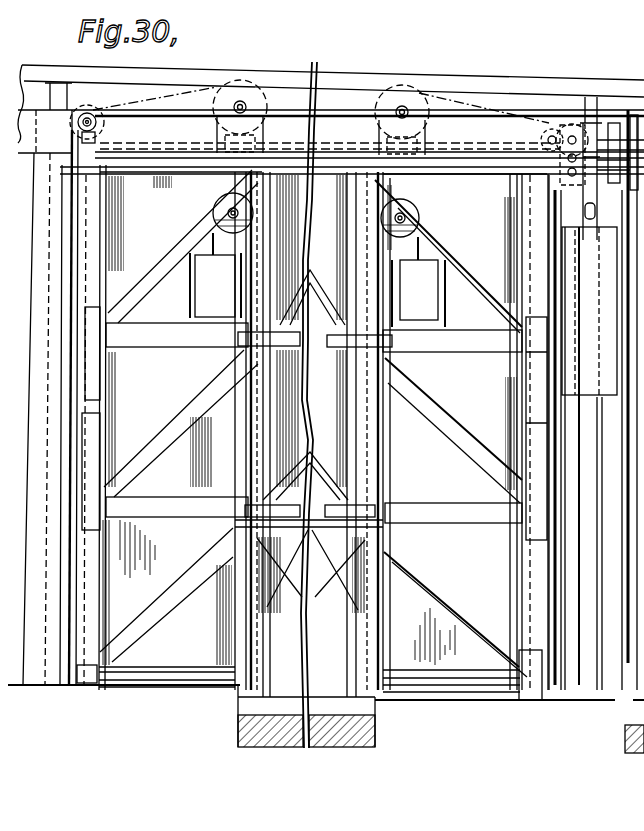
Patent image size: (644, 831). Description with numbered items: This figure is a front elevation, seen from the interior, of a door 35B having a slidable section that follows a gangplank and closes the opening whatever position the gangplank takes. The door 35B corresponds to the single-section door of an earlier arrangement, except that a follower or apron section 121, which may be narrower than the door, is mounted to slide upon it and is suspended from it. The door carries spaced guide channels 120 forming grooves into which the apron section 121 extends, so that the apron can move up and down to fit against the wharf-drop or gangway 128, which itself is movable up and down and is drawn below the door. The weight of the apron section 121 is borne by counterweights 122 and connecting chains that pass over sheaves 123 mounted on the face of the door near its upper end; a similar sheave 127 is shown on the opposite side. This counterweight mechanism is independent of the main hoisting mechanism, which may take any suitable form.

The door 35B is at (163, 648).
The guide channels 120 is at (386, 593).
The follower or apron section 121 is at (340, 665).
The counterweights 122 is at (432, 297).
The sheaves 123 is at (418, 220).
The counterweight pulley 127 is at (214, 203).
The wharf-drop or gangway 128 is at (340, 733).